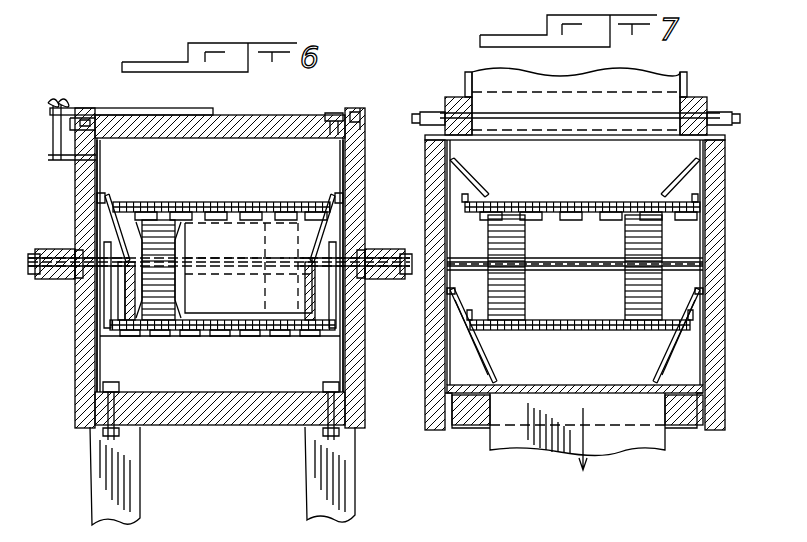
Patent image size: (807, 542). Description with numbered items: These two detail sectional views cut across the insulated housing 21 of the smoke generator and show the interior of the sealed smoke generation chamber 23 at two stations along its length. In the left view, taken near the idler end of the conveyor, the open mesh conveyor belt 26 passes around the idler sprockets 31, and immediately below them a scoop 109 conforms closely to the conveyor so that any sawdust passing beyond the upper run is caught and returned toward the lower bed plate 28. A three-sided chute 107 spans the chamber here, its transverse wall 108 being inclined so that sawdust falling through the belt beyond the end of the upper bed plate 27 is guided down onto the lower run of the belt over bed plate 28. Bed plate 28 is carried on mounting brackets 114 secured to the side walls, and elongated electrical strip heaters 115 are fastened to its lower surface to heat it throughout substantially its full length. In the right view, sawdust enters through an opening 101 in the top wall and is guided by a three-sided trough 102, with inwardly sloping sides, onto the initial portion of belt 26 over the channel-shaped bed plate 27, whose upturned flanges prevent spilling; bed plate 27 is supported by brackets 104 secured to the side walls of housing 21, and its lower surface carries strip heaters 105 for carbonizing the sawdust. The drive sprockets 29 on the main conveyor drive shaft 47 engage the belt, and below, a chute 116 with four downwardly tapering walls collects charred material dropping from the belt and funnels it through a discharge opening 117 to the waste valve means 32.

In FIG. 6, the housing 21 is at (80, 338).
In FIG. 7, the housing 21 is at (706, 233).
In FIG. 6, the smoke generation chamber 23 is at (302, 372).
In FIG. 7, the smoke generation chamber 23 is at (700, 183).
In FIG. 6, the open mesh conveyor belt 26 is at (235, 203).
In FIG. 7, the open mesh conveyor belt 26 is at (563, 203).
In FIG. 6, the bed plate 27 is at (108, 205).
In FIG. 7, the bed plate 27 is at (480, 222).
In FIG. 6, the bed plate 28 is at (128, 337).
In FIG. 7, the bed plate 28 is at (472, 332).
In FIG. 7, the drive sprocket 29 is at (515, 255).
In FIG. 6, the idler sprocket 31 is at (262, 236).
In FIG. 7, the waste valve means 32 is at (607, 463).
In FIG. 7, the main conveyor drive shaft 47 is at (570, 272).
In FIG. 7, the opening 101 is at (500, 125).
In FIG. 7, the trough 102 is at (676, 190).
In FIG. 6, the support brace 104 is at (96, 214).
In FIG. 7, the support brace 104 is at (447, 218).
In FIG. 6, the electrical strip heater 105 is at (216, 216).
In FIG. 7, the electrical strip heater 105 is at (600, 220).
In FIG. 6, the chute 107 is at (322, 300).
In FIG. 6, the transverse wall 108 is at (242, 302).
In FIG. 6, the scoop 109 is at (118, 292).
In FIG. 6, the mounting bracket 114 is at (84, 356).
In FIG. 6, the electrical strip heater 115 is at (152, 337).
In FIG. 7, the chute 116 is at (680, 350).
In FIG. 7, the discharge opening 117 is at (612, 388).